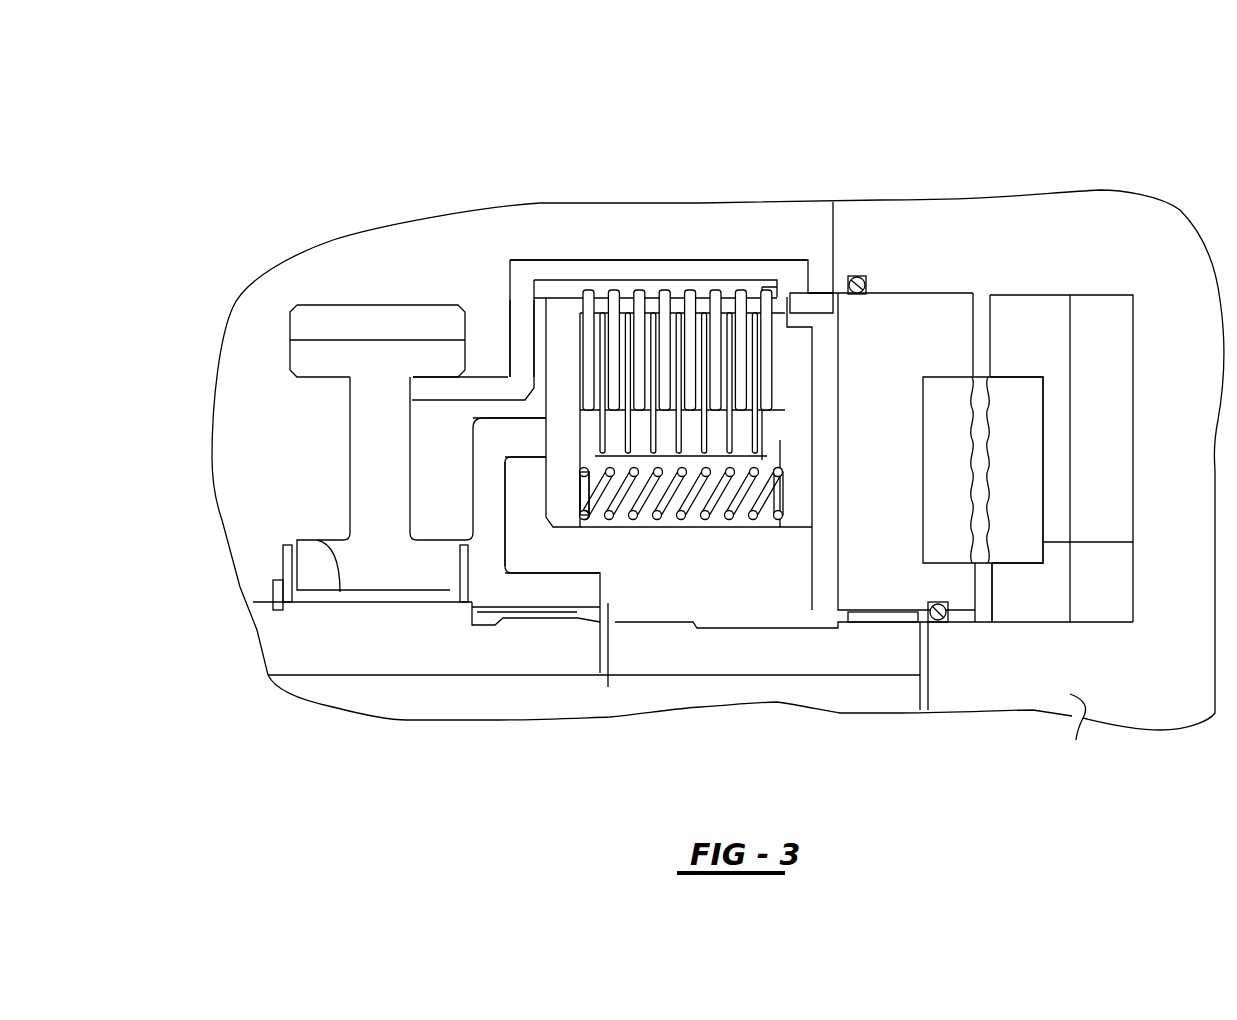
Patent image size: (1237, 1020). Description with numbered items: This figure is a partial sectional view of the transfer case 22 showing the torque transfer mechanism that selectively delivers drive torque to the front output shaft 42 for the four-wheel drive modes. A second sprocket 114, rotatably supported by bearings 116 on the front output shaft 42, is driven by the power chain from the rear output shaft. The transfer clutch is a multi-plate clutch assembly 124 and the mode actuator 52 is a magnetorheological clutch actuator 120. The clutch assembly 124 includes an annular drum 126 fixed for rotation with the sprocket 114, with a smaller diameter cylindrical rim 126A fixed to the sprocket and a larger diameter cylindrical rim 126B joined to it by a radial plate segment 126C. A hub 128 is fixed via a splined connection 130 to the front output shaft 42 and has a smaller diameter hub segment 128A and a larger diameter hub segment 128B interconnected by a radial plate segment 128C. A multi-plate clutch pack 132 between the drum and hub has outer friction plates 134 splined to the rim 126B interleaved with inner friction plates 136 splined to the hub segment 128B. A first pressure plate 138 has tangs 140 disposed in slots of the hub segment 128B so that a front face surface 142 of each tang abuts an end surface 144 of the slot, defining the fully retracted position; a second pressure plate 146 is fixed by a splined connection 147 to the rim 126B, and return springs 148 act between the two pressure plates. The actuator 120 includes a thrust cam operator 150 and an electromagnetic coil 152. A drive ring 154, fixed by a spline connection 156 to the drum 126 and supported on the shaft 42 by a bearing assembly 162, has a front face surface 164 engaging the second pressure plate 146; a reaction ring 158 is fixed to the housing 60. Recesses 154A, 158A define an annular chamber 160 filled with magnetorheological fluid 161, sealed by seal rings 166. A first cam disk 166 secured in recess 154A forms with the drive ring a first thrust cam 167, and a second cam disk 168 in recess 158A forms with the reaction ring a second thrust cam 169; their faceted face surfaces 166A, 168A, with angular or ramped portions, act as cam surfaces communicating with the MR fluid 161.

The transfer case 22 is at (987, 104).
The front output shaft 42 is at (290, 642).
The mode actuator 52 is at (1051, 124).
The housing 60 is at (1068, 696).
The second sprocket 114 is at (372, 458).
The bearings 116 is at (300, 535).
The magnetorheological clutch actuator 120 is at (1081, 244).
The multi-plate clutch assembly 124 is at (626, 251).
The annular drum 126 is at (553, 387).
The first smaller diameter cylindrical rim 126A is at (438, 388).
The second larger diameter cylindrical rim 126B is at (563, 270).
The radial plate segment 126C is at (520, 365).
The hub 128 is at (480, 486).
The first smaller diameter hub segment 128A is at (552, 587).
The second larger diameter hub segment 128B is at (612, 452).
The radial plate segment 128C is at (490, 506).
The splined connection 130 is at (530, 618).
The multi-plate clutch pack 132 is at (691, 291).
The outer friction plates 134 is at (595, 300).
The inner friction plates 136 is at (592, 463).
The first pressure plate 138 is at (522, 365).
The tangs 140 is at (553, 478).
The front face surface 142 is at (550, 470).
The end surface 144 is at (550, 438).
The second pressure plate 146 is at (800, 494).
The splined connection 147 is at (770, 295).
The return springs 148 is at (705, 521).
The thrust cam operator 150 is at (983, 294).
The electromagnetic coil 152 is at (1136, 329).
The drive ring 154 is at (891, 451).
The recess 154A is at (928, 503).
The spline connection 156 is at (802, 300).
The reaction ring 158 is at (1061, 458).
The recess 158A is at (1043, 540).
The annular chamber 160 is at (980, 598).
The magnetorheological fluid 161 is at (985, 420).
The bearing assembly 162 is at (880, 622).
The front face surface 164 is at (805, 414).
The first cam disk 166 is at (858, 283).
The faceted face surface 166A is at (985, 507).
The first thrust cam 167 is at (945, 334).
The second cam disk 168 is at (1016, 470).
The faceted face surface 168A is at (1012, 496).
The second thrust cam 169 is at (1037, 581).